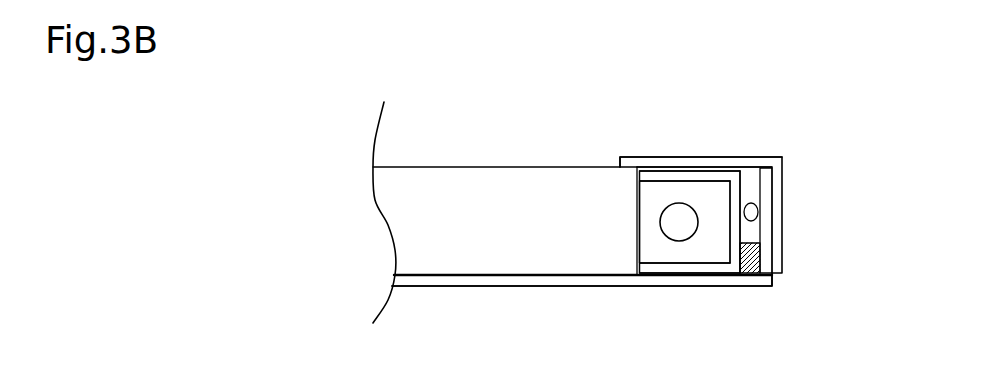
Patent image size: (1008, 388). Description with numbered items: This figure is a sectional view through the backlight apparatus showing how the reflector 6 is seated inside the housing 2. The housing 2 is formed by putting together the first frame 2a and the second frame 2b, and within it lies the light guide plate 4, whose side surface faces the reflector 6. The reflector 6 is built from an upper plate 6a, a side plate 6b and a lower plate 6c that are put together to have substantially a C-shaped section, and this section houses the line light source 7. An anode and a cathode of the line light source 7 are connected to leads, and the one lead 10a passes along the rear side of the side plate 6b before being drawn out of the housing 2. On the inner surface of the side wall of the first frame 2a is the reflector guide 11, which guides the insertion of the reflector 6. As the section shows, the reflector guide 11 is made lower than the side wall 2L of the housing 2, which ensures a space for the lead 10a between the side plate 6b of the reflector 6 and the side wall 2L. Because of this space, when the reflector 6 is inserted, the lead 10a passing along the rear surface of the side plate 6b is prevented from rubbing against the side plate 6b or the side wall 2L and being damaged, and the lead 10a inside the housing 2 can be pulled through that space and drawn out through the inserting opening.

The housing 2 is at (639, 226).
The first frame 2a is at (487, 282).
The second frame 2b is at (675, 163).
The side wall 2L is at (763, 185).
The light guide plate 4 is at (447, 223).
The reflector 6 is at (706, 233).
The upper plate 6a is at (710, 180).
The side plate 6b is at (735, 212).
The lower plate 6c is at (662, 268).
The line light source 7 is at (678, 222).
The lead 10a is at (752, 214).
The reflector guide 11 is at (758, 272).